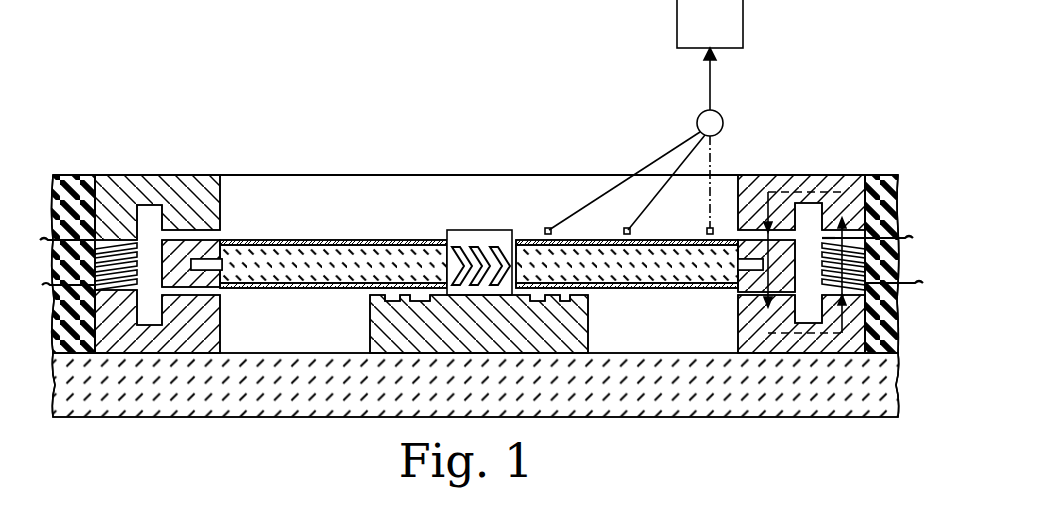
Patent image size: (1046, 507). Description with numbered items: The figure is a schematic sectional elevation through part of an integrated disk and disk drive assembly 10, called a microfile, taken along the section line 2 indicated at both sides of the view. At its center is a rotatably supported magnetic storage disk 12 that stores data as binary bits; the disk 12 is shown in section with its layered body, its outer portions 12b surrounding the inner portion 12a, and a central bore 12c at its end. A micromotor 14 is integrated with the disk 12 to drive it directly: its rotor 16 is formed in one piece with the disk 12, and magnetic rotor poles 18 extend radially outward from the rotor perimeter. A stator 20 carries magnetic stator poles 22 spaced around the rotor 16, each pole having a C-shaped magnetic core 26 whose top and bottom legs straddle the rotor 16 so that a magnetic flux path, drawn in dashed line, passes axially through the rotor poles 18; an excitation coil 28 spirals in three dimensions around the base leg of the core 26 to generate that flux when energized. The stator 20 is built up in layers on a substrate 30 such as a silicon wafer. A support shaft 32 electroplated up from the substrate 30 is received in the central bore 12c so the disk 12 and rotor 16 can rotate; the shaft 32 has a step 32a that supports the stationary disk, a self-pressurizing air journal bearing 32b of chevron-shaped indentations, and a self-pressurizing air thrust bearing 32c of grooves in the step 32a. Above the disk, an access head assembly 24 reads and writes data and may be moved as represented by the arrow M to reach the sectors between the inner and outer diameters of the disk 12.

The section line 2 is at (68, 150).
The integrated disk and disk drive assembly 10 is at (240, 126).
The magnetic storage disk 12 is at (477, 233).
The rod core 12a is at (375, 262).
The rod outer layer 12b is at (308, 240).
The central bore 12c is at (446, 245).
The micromotor 14 is at (770, 152).
The rotor 16 is at (738, 288).
The magnetic rotor poles 18 is at (225, 240).
The stator 20 is at (137, 170).
The magnetic stator poles 22 is at (801, 174).
The access head assembly 24 is at (699, 36).
The magnetic core 26 is at (752, 333).
The excitation coil 28 is at (862, 310).
The substrate 30 is at (415, 397).
The support shaft 32 is at (477, 247).
The step 32a is at (372, 295).
The self-pressurizing air journal bearing 32b is at (482, 235).
The self-pressurizing air thrust bearing 32c is at (582, 292).
The arrow M is at (636, 153).